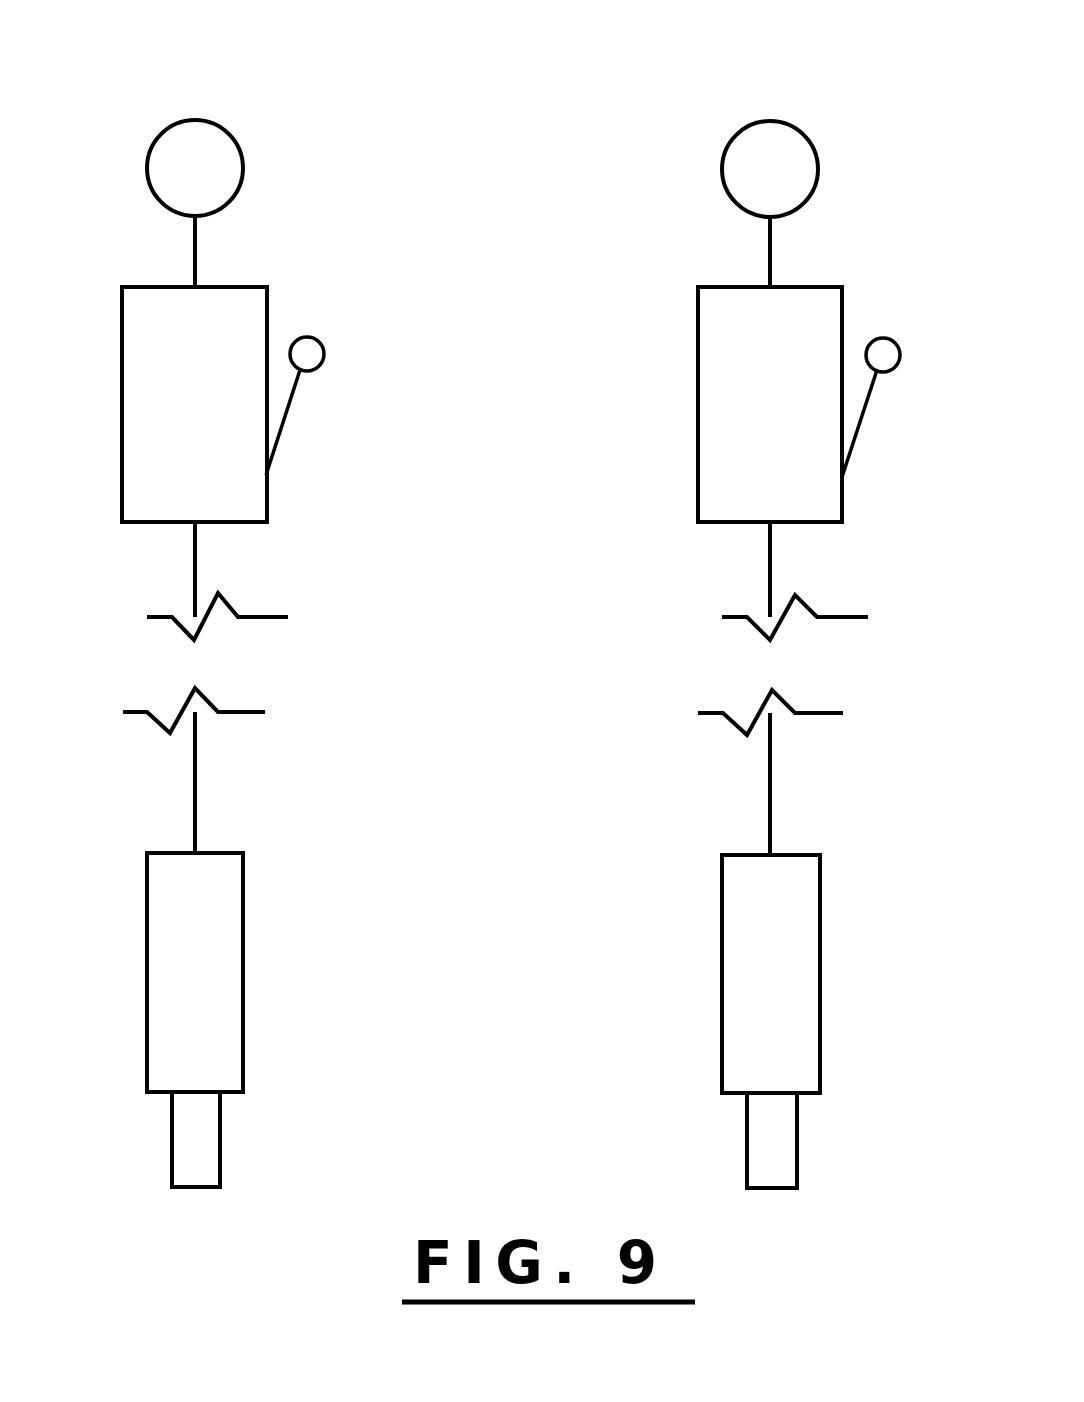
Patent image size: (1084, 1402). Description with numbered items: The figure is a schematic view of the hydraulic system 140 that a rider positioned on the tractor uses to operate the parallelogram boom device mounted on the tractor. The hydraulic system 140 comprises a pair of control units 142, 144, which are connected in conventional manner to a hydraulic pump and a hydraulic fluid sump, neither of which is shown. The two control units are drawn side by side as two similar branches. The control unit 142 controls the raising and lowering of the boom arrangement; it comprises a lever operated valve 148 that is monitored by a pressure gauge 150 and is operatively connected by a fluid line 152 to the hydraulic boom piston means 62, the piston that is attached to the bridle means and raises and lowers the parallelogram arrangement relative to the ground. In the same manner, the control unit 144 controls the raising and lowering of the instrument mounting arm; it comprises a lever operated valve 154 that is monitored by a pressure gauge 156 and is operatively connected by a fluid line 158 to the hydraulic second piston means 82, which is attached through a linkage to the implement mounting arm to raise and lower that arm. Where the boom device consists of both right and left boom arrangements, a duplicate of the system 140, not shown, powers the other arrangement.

The hydraulic system 140 is at (474, 130).
The control unit 142 is at (308, 282).
The control unit 144 is at (628, 304).
The lever operated valve 148 is at (217, 485).
The pressure gauge 150 is at (202, 147).
The fluid line 152 is at (198, 780).
The lever operated valve 154 is at (735, 433).
The pressure gauge 156 is at (752, 158).
The fluid line 158 is at (770, 807).
The hydraulic boom piston means 62 is at (288, 997).
The hydraulic second piston means 82 is at (684, 980).